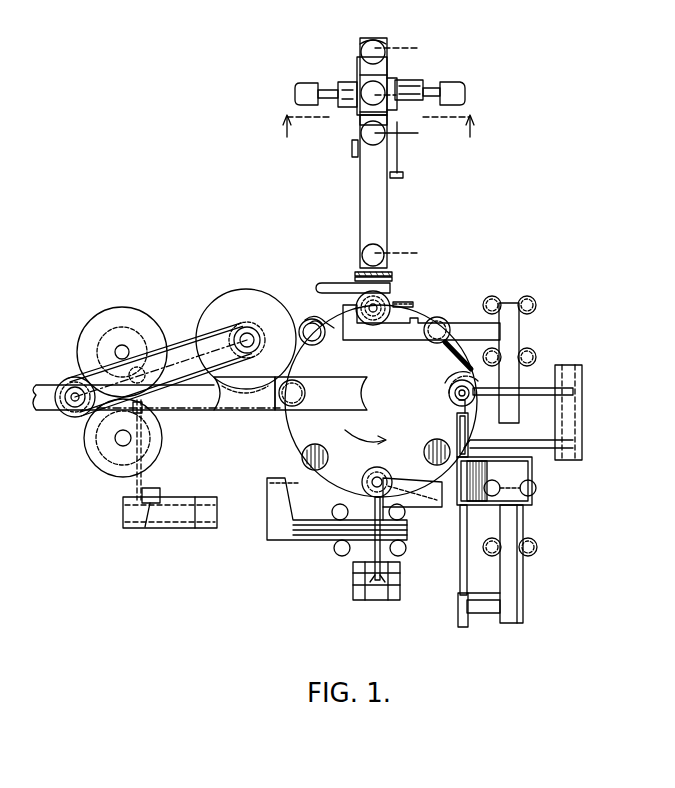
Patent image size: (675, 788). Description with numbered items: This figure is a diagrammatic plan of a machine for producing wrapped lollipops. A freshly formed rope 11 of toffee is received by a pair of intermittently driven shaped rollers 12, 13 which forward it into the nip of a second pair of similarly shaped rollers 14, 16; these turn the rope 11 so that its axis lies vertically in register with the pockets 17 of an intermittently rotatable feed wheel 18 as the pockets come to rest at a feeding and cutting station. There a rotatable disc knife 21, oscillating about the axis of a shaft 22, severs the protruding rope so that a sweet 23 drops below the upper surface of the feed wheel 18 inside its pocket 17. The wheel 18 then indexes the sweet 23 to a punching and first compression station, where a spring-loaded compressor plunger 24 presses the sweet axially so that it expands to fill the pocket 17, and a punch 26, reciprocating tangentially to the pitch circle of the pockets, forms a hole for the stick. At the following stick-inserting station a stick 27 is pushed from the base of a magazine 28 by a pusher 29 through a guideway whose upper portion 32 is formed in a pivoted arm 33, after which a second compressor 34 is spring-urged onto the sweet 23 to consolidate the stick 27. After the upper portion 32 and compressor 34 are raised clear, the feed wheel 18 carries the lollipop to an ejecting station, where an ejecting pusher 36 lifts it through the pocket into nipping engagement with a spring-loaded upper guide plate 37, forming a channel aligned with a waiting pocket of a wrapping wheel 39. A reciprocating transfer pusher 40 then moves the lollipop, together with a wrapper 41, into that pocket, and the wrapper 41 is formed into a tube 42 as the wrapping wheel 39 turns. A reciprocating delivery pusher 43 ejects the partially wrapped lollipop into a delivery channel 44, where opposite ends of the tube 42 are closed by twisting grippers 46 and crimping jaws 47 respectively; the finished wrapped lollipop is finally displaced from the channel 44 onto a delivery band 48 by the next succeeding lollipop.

The rope 11 is at (188, 403).
The shaped roller 12 is at (123, 318).
The shaped roller 13 is at (96, 441).
The shaped roller 14 is at (323, 400).
The shaped roller 16 is at (242, 425).
The pocket 17 is at (308, 320).
The feed wheel 18 is at (304, 440).
The disc knife 21 is at (253, 293).
The shaft 22 is at (68, 382).
The sweet 23 is at (303, 458).
The compressor plunger 24 is at (387, 471).
The punch 26 is at (293, 484).
The stick 27 is at (407, 48).
The magazine 28 is at (513, 472).
The pusher 29 is at (461, 563).
The upper portion of guideway 32 is at (457, 423).
The pivoted arm 33 is at (531, 445).
The second compressor 34 is at (449, 390).
The ejecting pusher 36 is at (392, 288).
The upper guide plate 37 is at (362, 292).
The wrapping wheel 39 is at (373, 213).
The transfer pusher 40 is at (403, 330).
The wrapper 41 is at (352, 282).
The tube 42 is at (356, 82).
The delivery pusher 43 is at (358, 155).
The delivery channel 44 is at (364, 118).
The twisting grippers 46 is at (340, 85).
The crimping jaws 47 is at (400, 86).
The delivery band 48 is at (368, 45).